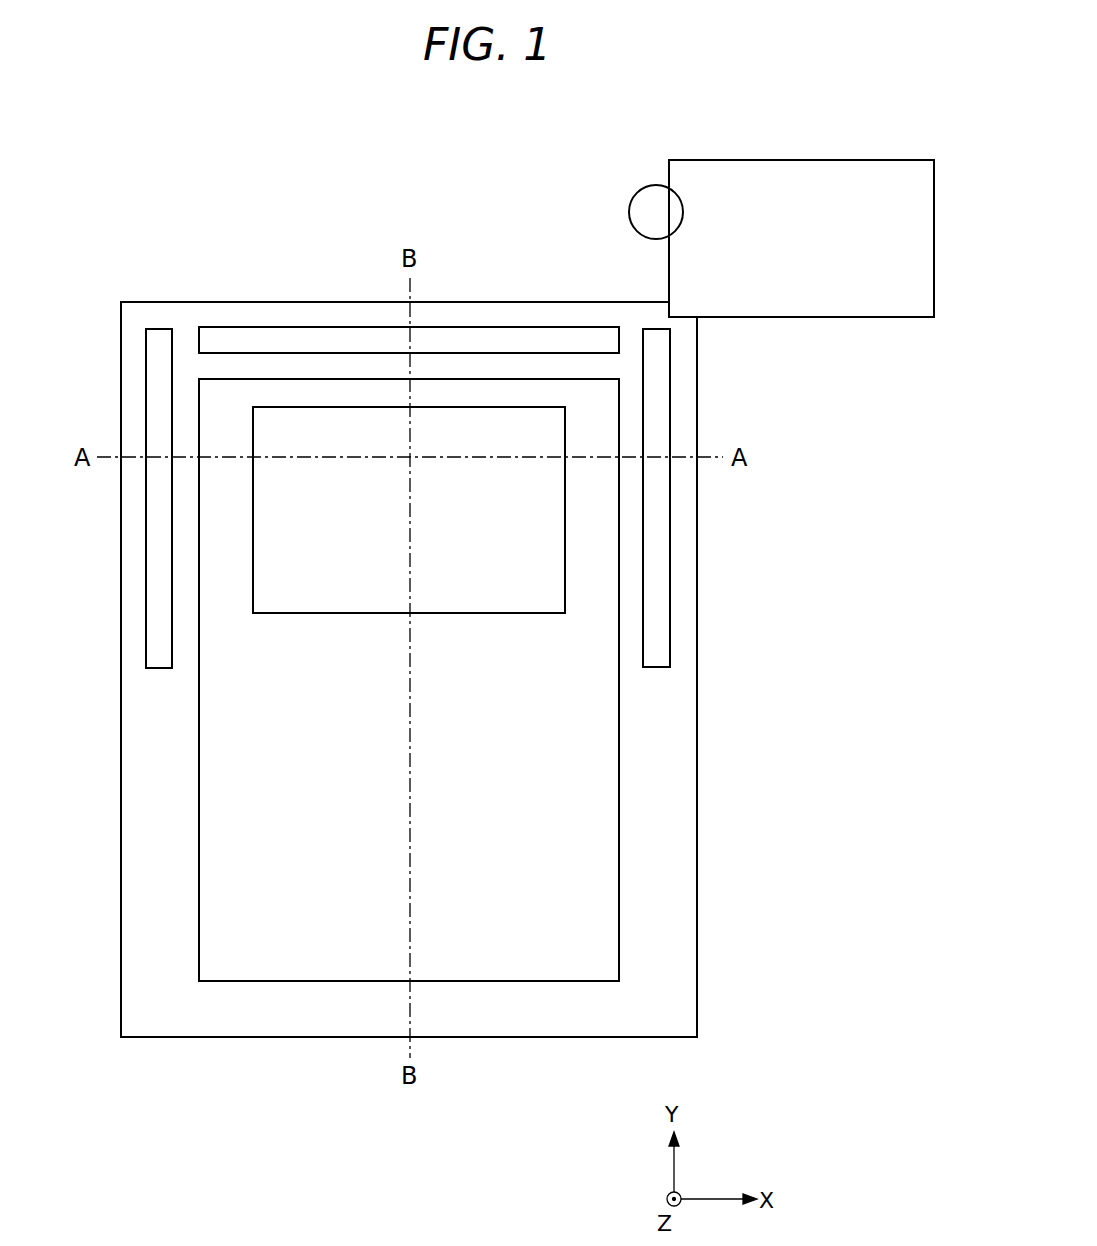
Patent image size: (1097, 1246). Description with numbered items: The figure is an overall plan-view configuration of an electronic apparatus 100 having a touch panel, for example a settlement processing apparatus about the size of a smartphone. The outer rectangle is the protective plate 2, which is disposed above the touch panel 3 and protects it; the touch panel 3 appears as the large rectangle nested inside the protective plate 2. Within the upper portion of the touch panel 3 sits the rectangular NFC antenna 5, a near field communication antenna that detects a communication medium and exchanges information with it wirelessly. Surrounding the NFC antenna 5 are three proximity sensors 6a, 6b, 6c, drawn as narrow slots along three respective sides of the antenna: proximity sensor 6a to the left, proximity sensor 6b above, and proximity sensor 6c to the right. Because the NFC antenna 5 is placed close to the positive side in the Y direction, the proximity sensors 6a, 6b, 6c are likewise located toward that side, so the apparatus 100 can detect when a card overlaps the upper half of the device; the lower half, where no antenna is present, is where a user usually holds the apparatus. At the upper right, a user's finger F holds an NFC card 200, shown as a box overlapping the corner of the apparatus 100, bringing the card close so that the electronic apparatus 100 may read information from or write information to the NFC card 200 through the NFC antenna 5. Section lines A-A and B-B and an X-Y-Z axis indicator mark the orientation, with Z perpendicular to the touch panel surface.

The electronic apparatus 100 is at (425, 586).
The NFC card 200 is at (800, 146).
The finger F is at (631, 187).
The protective plate 2 is at (698, 686).
The touch panel 3 is at (620, 795).
The NFC antenna 5 is at (478, 614).
The proximity sensor 6a is at (147, 577).
The proximity sensor 6b is at (463, 327).
The proximity sensor 6c is at (671, 578).